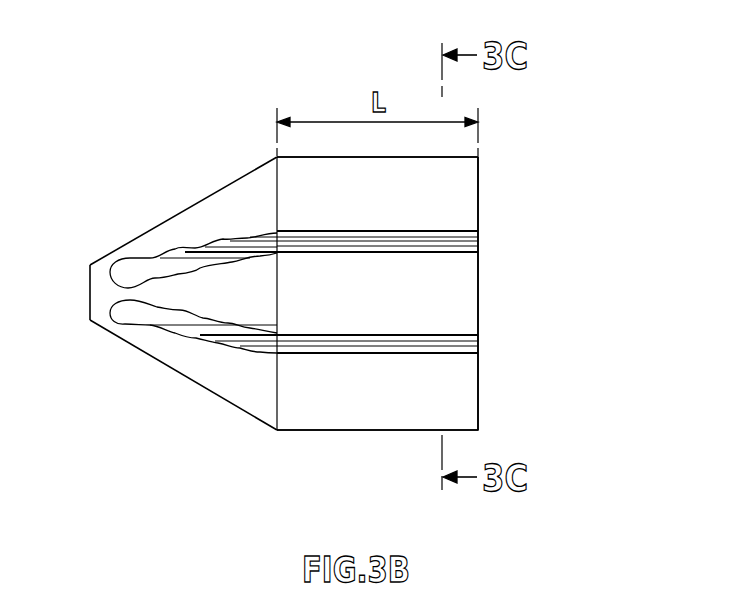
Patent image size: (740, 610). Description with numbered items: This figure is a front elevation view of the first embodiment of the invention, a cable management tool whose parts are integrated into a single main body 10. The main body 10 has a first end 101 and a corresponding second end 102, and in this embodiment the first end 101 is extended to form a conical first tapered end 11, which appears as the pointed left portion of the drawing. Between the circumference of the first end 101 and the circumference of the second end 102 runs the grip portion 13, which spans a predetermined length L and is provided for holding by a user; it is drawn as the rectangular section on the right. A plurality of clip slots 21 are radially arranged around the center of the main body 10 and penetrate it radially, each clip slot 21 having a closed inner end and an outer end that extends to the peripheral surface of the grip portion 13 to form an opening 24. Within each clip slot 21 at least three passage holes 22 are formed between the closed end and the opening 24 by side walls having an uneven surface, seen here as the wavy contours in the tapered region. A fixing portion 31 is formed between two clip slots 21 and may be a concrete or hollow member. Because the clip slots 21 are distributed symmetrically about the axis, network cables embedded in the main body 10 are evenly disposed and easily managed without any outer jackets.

The main body 10 is at (490, 148).
The first tapered end 11 is at (102, 273).
The grip portion 13 is at (418, 302).
The clip slot 21 is at (452, 232).
The passage hole 22 is at (128, 321).
The opening 24 is at (318, 342).
The fixing portion 31 is at (270, 175).
The first end 101 is at (277, 397).
The second end 102 is at (480, 396).